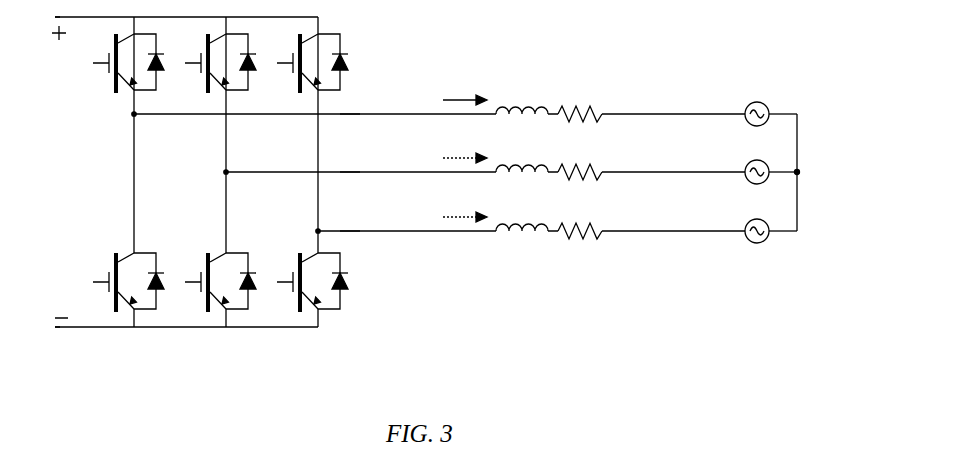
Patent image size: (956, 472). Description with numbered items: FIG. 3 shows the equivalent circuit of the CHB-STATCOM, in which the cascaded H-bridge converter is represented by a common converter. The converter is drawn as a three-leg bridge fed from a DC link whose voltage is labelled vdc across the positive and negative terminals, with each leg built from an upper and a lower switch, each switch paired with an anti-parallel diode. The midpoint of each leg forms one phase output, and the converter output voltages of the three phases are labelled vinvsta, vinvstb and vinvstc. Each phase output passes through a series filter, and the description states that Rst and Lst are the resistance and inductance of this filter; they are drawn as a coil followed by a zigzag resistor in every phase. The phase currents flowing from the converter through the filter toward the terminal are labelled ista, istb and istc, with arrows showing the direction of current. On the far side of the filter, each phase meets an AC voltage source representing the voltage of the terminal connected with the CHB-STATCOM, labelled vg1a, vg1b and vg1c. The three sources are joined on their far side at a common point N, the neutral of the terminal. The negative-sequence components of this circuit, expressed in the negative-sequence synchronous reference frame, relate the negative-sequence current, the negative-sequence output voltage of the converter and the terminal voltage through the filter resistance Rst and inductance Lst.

The DC link voltage vdc is at (54, 172).
The inductance of the filter Lst is at (522, 151).
The resistance of the filter Rst is at (580, 155).
The phase a current ista is at (463, 86).
The phase b current istb is at (463, 143).
The phase c current istc is at (463, 202).
The inverter phase a voltage vinvsta is at (371, 93).
The inverter phase b voltage vinvstb is at (371, 153).
The inverter phase c voltage vinvstc is at (371, 213).
The grid phase a voltage source vg1a is at (746, 100).
The grid phase b voltage source vg1b is at (746, 158).
The grid phase c voltage source vg1c is at (746, 218).
The neutral point N is at (808, 172).